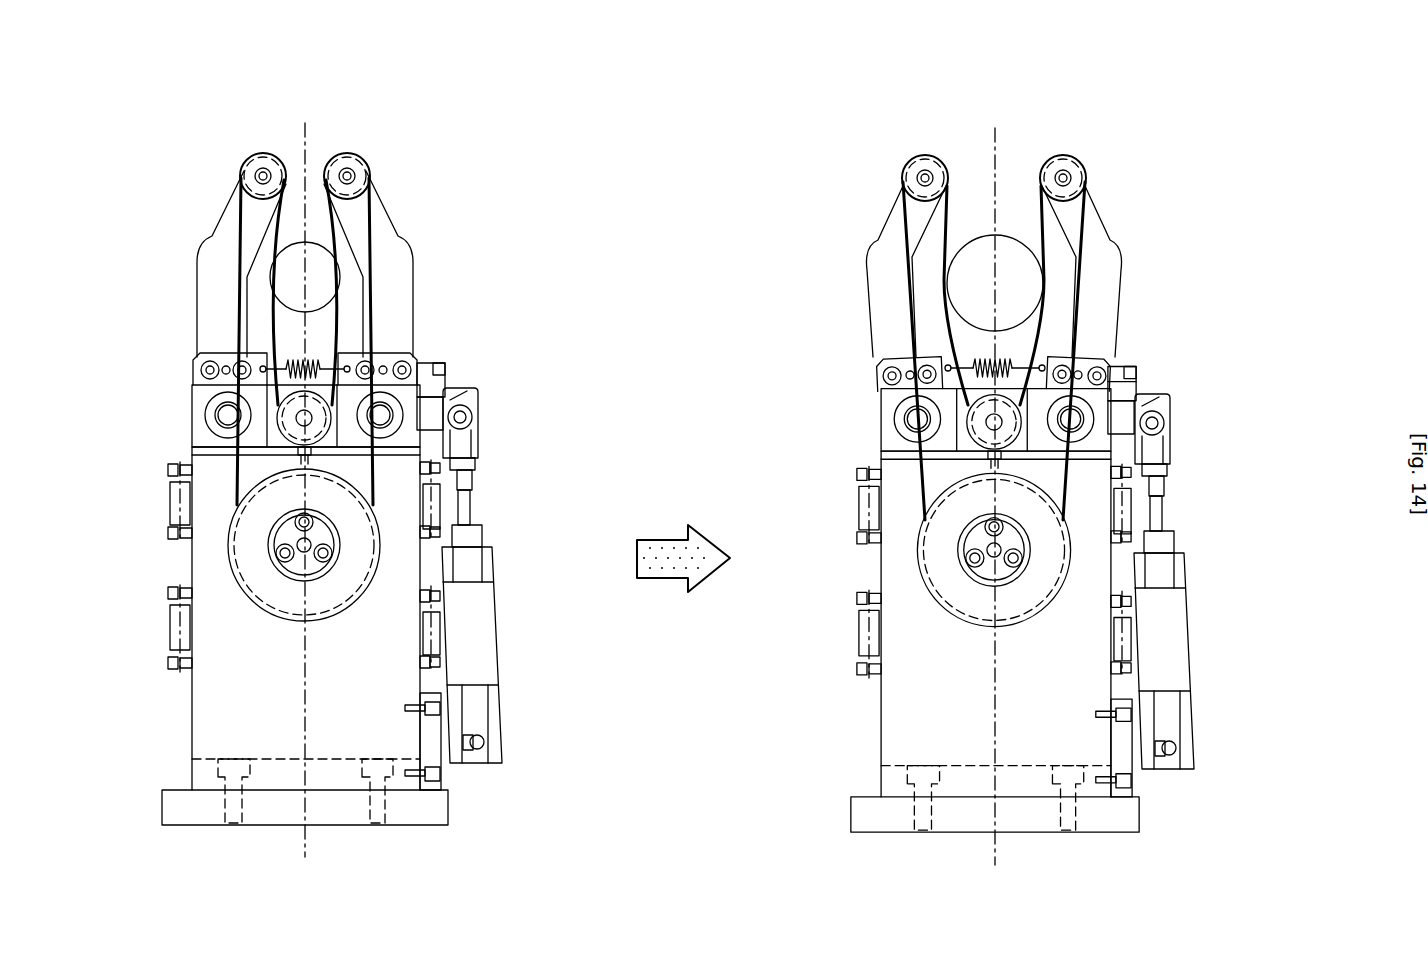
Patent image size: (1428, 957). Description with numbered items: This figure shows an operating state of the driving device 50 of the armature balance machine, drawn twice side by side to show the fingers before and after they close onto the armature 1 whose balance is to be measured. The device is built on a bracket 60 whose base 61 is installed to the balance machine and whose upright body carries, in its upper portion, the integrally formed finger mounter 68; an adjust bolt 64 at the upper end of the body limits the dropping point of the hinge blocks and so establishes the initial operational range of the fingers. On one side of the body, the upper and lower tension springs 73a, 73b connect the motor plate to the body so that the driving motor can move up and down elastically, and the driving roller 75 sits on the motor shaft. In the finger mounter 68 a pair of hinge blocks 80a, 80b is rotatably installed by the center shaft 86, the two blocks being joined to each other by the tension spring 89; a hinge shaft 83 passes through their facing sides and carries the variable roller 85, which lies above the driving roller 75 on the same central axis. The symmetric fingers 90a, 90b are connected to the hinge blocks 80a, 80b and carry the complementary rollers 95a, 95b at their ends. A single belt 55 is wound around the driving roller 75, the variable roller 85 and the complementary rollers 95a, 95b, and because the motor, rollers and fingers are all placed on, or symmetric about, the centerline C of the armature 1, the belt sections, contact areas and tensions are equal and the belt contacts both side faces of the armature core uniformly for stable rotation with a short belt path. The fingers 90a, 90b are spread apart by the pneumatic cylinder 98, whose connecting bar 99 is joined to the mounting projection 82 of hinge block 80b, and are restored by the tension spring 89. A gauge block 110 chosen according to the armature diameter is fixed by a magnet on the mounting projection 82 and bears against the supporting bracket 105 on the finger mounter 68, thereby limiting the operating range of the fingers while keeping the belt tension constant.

The armature 1 is at (320, 273).
The driving device 50 is at (518, 217).
The belt 55 is at (242, 222).
The bracket 60 is at (200, 715).
The base 61 is at (200, 768).
The adjust bolt 64 is at (312, 460).
The finger mounter 68 is at (192, 400).
The upper tension spring 73a is at (180, 512).
The lower tension spring 73b is at (180, 618).
The driving roller 75 is at (270, 598).
The hinge block 80a is at (197, 363).
The hinge block 80b is at (378, 352).
The mounting projection 82 is at (428, 413).
The hinge shaft 83 is at (228, 420).
The variable roller 85 is at (287, 425).
The center shaft 86 is at (408, 435).
The tension spring 89 is at (350, 362).
The finger 90a is at (213, 262).
The finger 90b is at (382, 212).
The complementary roller 95a is at (250, 172).
The complementary roller 95b is at (368, 166).
The pneumatic cylinder 98 is at (485, 625).
The connecting bar 99 is at (478, 428).
The supporting bracket 105 is at (446, 362).
The gauge block 110 is at (1128, 390).
The centerline C is at (305, 142).